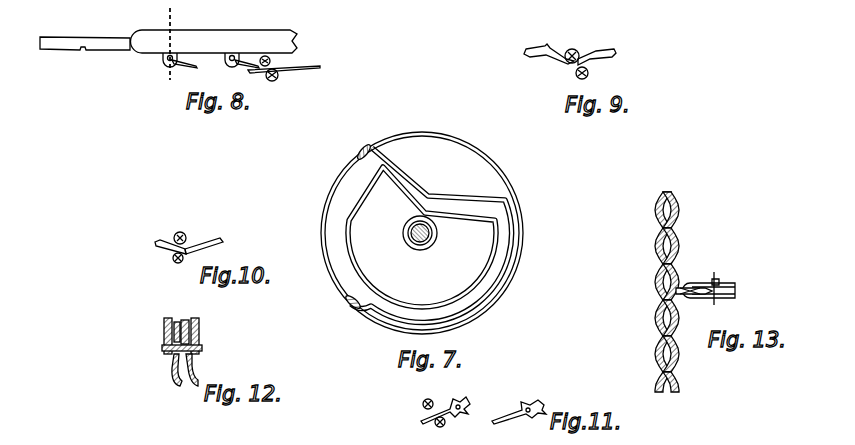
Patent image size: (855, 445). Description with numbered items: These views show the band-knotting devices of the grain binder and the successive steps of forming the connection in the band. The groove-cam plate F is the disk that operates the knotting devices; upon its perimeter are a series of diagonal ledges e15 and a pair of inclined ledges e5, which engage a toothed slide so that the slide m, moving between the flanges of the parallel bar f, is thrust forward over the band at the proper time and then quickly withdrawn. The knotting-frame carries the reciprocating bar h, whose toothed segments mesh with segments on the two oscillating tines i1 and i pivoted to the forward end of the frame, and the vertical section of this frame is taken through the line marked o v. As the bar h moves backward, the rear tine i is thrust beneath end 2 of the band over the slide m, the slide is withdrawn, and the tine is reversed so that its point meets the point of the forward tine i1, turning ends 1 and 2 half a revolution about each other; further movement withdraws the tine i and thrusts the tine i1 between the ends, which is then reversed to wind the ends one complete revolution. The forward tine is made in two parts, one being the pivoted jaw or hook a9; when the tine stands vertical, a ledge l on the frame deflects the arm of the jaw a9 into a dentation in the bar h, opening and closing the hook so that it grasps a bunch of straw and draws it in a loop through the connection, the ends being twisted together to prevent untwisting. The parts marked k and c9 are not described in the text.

In FIG. 8, the reciprocating bar h is at (85, 34).
In FIG. 12, the reciprocating bar h is at (199, 322).
In FIG. 8, the parallel bar f is at (214, 48).
In FIG. 12, the parallel bar f is at (161, 336).
In FIG. 8, the section line o v o v o is at (160, 44).
In FIG. 8, the section line o v o v is at (167, 44).
In FIG. 8, the forward tine i1 is at (187, 69).
In FIG. 9, the forward tine i1 is at (549, 54).
In FIG. 10, the forward tine i1 is at (170, 241).
In FIG. 12, the forward tine i1 is at (197, 366).
In FIG. 13, the forward tine i1 is at (712, 293).
In FIG. 11, the forward tine i1 is at (445, 402).
In FIG. 8, the rear tine i is at (247, 69).
In FIG. 9, the rear tine i is at (597, 56).
In FIG. 10, the rear tine i is at (204, 241).
In FIG. 11, the rear tine i is at (519, 406).
In FIG. 8, the slide m is at (284, 66).
In FIG. 7, the cam-groove plate F is at (422, 233).
In FIG. 7, the diagonal ledges e15 is at (358, 147).
In FIG. 7, the diagonal ledges e5 is at (348, 307).
In FIG. 12, the ledge l is at (176, 320).
In FIG. 12, the part k is at (186, 320).
In FIG. 12, the pivoted jaw or hook a9 is at (174, 366).
In FIG. 13, the first-formed end of the band 1 is at (675, 210).
In FIG. 13, the opposite end of the band 2 is at (657, 210).
In FIG. 13, the pin c9 is at (726, 288).